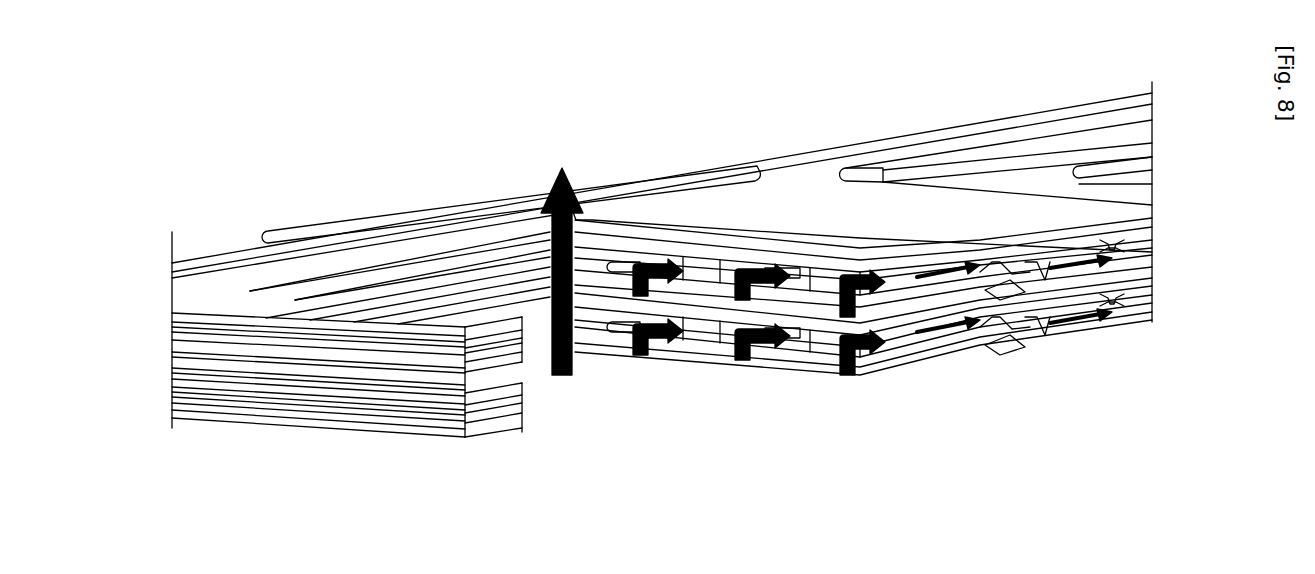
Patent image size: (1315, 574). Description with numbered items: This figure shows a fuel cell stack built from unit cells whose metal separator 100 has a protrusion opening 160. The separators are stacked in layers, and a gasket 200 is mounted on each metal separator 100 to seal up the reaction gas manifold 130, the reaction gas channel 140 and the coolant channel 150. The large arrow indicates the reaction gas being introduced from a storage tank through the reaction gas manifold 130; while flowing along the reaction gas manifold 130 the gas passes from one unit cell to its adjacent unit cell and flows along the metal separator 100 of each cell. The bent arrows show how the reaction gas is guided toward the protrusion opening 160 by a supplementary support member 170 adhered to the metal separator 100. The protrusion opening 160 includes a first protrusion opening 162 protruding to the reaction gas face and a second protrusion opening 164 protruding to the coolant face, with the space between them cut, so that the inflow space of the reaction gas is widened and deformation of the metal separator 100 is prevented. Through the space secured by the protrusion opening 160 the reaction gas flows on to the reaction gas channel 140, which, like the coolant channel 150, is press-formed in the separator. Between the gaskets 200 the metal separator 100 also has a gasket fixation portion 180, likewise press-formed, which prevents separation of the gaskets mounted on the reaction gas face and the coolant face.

The metal separator 100 is at (408, 427).
The gasket 200 is at (498, 423).
The reaction gas manifold 130 is at (634, 423).
The reaction gas channel 140 is at (978, 168).
The coolant channel 150 is at (1057, 170).
The supplementary support member 170 is at (700, 332).
The first protrusion opening 162 is at (1010, 347).
The second protrusion opening 164 is at (1037, 327).
The protrusion opening 160 is at (1093, 422).
The gasket fixation portion 180 is at (1118, 312).